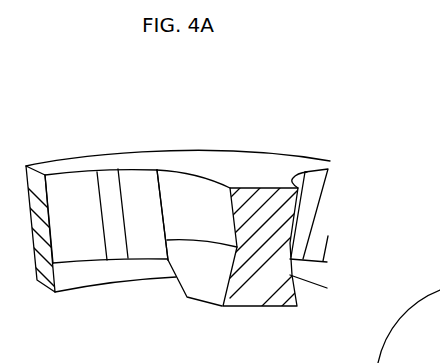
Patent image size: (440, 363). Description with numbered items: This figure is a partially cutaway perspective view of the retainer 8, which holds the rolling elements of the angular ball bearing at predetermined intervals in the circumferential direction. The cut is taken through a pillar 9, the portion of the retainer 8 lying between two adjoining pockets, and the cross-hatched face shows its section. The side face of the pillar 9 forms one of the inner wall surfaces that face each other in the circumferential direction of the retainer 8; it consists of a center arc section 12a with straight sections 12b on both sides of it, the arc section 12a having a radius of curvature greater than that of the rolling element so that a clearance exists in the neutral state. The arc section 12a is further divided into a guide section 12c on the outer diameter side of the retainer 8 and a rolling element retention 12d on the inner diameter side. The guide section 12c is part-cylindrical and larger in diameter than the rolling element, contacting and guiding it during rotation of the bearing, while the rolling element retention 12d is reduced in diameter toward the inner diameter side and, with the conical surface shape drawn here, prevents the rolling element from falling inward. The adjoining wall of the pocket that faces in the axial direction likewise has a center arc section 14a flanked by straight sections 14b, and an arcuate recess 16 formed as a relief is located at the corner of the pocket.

The retainer 8 is at (254, 127).
The pillar 9 is at (254, 296).
The arc section 12a is at (395, 203).
The straight section 12b is at (157, 190).
The guide section 12c is at (213, 198).
The rolling element retention 12d is at (212, 253).
The arc section 14a is at (60, 182).
The straight section 14b is at (106, 183).
The arcuate recess 16 is at (137, 180).